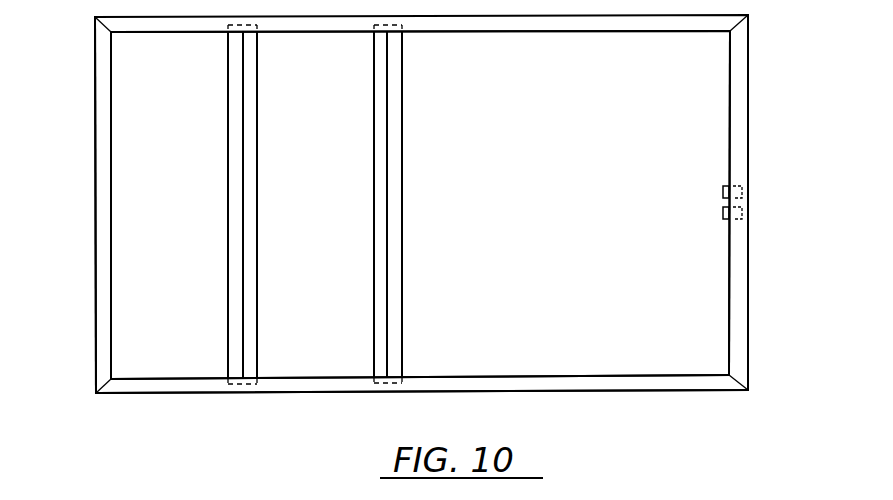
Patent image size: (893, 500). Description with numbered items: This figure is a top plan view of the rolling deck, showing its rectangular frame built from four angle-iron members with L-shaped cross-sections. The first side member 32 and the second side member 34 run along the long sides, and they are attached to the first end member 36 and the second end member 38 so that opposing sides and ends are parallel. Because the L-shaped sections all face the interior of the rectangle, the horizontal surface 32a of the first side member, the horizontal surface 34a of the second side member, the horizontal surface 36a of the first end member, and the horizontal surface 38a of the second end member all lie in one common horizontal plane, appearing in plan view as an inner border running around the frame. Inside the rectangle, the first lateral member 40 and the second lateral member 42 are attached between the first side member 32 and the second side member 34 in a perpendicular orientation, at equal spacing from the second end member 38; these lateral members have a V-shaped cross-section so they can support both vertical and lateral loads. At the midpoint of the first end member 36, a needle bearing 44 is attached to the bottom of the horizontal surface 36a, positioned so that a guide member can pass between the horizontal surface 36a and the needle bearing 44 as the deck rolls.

The first side member 32 is at (576, 40).
The horizontal surface 32a is at (465, 31).
The second side member 34 is at (612, 403).
The horizontal surface 34a is at (450, 377).
The first end member 36 is at (766, 59).
The horizontal surface 36a is at (730, 152).
The second end member 38 is at (86, 114).
The horizontal surface 38a is at (110, 232).
The first lateral member 40 is at (403, 148).
The second lateral member 42 is at (258, 165).
The needle bearing 44 is at (725, 200).